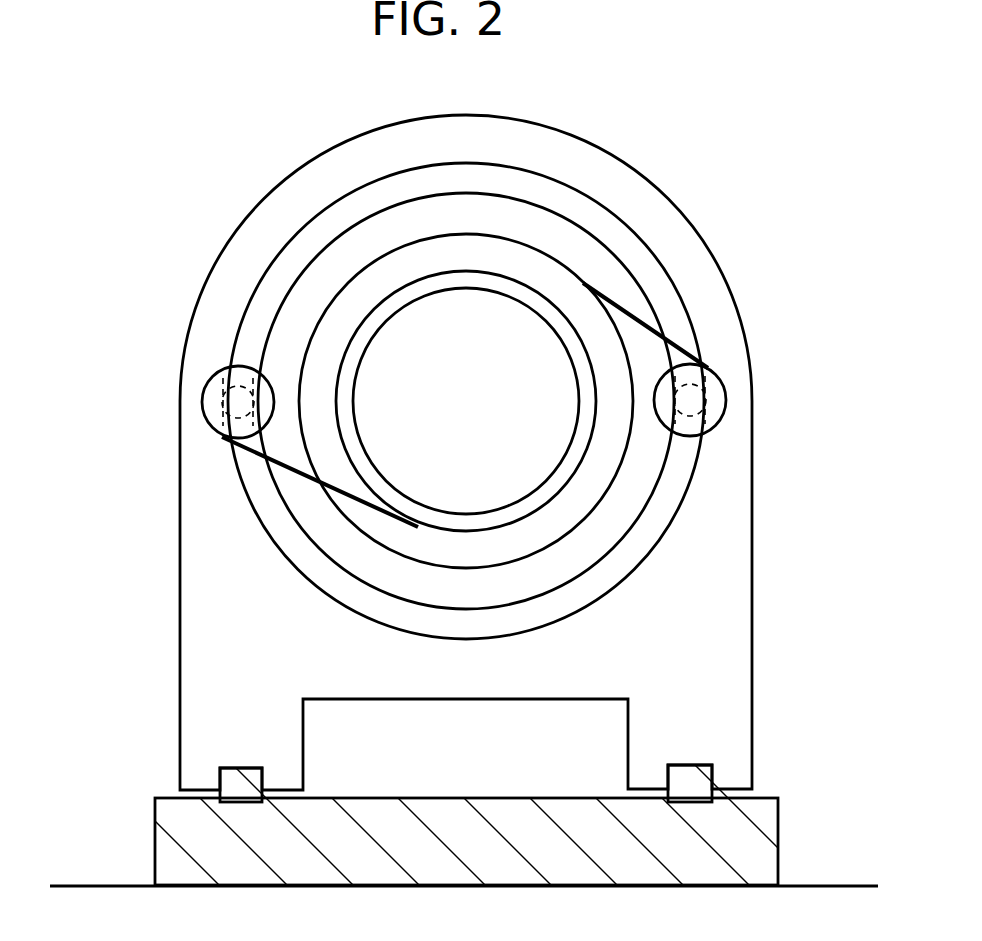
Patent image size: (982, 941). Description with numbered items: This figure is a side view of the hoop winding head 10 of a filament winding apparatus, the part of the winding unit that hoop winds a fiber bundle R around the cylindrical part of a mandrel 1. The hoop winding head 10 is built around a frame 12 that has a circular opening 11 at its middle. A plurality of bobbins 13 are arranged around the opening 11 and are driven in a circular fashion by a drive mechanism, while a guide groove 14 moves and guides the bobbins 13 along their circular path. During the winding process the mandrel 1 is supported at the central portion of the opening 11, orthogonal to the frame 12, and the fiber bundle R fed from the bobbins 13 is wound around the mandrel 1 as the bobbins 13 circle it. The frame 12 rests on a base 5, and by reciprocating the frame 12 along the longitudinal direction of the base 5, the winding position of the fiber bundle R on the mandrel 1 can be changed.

The mandrel 1 is at (447, 418).
The base 5 is at (778, 853).
The hoop winding head 10 is at (464, 458).
The circular opening 11 is at (418, 562).
The frame 12 is at (725, 556).
The bobbins 13 is at (204, 397).
The guide groove 14 is at (603, 595).
The fiber bundle R is at (333, 480).